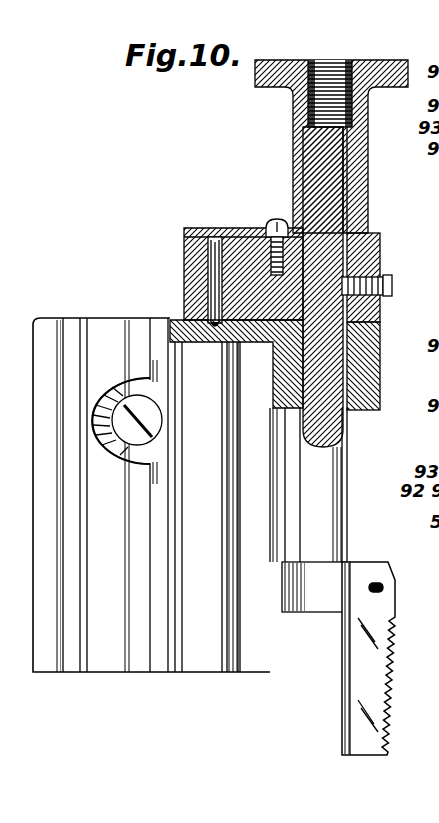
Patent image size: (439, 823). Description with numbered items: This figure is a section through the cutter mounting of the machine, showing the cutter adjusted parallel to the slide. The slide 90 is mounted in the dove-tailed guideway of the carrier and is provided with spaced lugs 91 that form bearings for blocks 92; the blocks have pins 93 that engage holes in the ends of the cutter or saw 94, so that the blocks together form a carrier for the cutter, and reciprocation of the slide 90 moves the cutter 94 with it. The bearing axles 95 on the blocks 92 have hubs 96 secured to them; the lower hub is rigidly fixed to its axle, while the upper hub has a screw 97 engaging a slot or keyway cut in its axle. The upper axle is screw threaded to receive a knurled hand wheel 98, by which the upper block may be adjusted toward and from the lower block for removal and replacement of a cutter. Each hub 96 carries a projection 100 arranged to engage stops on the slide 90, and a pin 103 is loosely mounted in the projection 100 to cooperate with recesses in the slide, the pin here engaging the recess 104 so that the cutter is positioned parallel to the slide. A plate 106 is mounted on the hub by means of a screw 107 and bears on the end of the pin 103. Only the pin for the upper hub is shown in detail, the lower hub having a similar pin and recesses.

The slide 90 is at (265, 525).
The spaced lugs 91 is at (366, 381).
The blocks 92 is at (313, 587).
The pins 93 is at (383, 587).
The cutter or saw 94 is at (370, 673).
The bearing axles 95 is at (345, 468).
The hubs 96 is at (365, 263).
The screw 97 is at (392, 290).
The knurled hand wheel 98 is at (355, 191).
The projection 100 is at (186, 258).
The pin 103 is at (208, 298).
The recess 104 is at (222, 336).
The plate 106 is at (228, 240).
The screw 107 is at (274, 219).